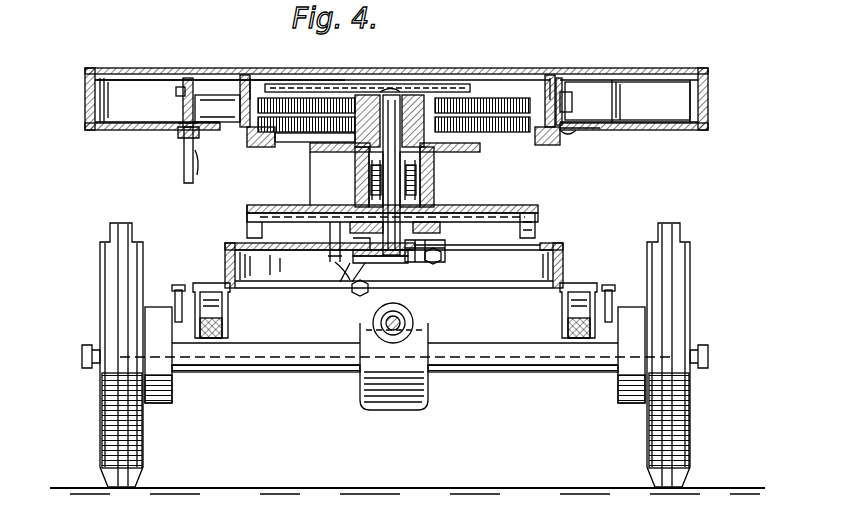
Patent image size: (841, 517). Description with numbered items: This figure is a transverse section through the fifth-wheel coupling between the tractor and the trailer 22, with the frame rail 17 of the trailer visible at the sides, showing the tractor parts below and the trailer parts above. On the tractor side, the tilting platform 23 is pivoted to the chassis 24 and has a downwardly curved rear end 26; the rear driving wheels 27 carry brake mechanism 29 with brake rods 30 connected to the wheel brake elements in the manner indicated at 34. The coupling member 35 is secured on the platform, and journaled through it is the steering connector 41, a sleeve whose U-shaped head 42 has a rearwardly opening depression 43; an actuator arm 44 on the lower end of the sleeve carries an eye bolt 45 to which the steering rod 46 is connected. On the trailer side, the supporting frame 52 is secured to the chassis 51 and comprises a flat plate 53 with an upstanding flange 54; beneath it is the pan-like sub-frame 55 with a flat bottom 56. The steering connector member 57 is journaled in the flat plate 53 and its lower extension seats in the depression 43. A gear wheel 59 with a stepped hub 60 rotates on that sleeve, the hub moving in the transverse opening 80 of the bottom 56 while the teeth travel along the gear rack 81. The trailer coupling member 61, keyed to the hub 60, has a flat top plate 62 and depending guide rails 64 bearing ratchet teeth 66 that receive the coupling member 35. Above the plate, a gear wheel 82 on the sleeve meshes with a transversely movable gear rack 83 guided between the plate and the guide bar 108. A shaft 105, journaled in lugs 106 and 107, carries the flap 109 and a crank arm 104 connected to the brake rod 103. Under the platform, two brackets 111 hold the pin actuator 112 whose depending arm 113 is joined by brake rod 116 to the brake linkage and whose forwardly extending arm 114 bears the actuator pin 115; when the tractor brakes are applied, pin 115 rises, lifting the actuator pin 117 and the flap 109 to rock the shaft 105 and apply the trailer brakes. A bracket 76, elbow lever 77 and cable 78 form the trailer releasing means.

The frame rail 17 is at (216, 160).
The trailer 22 is at (396, 91).
The tilting platform 23 is at (470, 206).
The chassis 24 is at (232, 243).
The curved rear end of the tilting platform 26 is at (537, 226).
The rear traction or driving wheels 27 is at (100, 292).
The brake mechanism 29 is at (165, 306).
The brake rods 30 is at (180, 287).
The brake connection 34 is at (229, 314).
The coupling member 35 is at (356, 190).
The steering connector 41 is at (434, 184).
The U-shaped head 42 is at (420, 172).
The depression or pocket 43 is at (422, 164).
The actuator arm 44 is at (320, 205).
The eye bolt 45 is at (328, 240).
The steering rod 46 is at (340, 268).
The chassis of the semi-trailer 51 is at (627, 101).
The supporting frame 52 is at (560, 115).
The flat plate 53 is at (270, 148).
The upstanding flange 54 is at (235, 108).
The sub-frame 55 is at (572, 140).
The flat bottom 56 is at (547, 145).
The steering connector member 57 is at (356, 168).
The gear wheel 59 is at (418, 112).
The stepped hub 60 is at (332, 152).
The trailer coupling member 61 is at (305, 185).
The flat top plate 62 is at (310, 143).
The guide rails 64 is at (436, 195).
The ratchet teeth 66 is at (447, 252).
The bracket 76 is at (440, 262).
The elbow lever 77 is at (398, 268).
The cable 78 is at (433, 268).
The transverse opening 80 is at (466, 108).
The gear rack 81 is at (520, 108).
The gear wheel 82 is at (362, 108).
The gear rack 83 is at (318, 100).
The brake rod 103 is at (184, 175).
The crank arm 104 is at (178, 130).
The shaft 105 is at (176, 92).
The lugs 106 is at (250, 80).
The lugs 107 is at (248, 95).
The guide bar 108 is at (272, 100).
The flap 109 is at (398, 98).
The brackets 111 is at (358, 262).
The pin actuator 112 is at (362, 292).
The depending arm 113 is at (345, 280).
The forwardly-extending arm 114 is at (352, 282).
The actuator pin 115 is at (275, 265).
The brake rod 116 is at (350, 330).
The actuator pin 117 is at (438, 85).